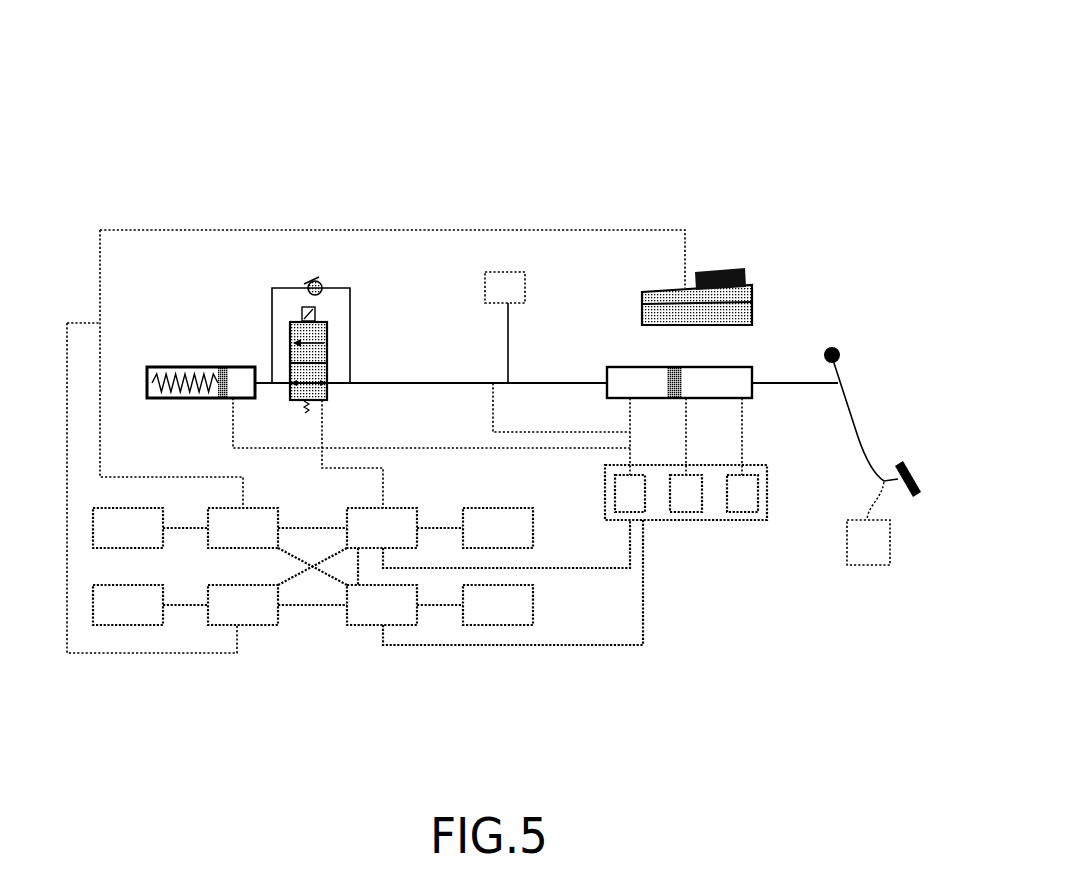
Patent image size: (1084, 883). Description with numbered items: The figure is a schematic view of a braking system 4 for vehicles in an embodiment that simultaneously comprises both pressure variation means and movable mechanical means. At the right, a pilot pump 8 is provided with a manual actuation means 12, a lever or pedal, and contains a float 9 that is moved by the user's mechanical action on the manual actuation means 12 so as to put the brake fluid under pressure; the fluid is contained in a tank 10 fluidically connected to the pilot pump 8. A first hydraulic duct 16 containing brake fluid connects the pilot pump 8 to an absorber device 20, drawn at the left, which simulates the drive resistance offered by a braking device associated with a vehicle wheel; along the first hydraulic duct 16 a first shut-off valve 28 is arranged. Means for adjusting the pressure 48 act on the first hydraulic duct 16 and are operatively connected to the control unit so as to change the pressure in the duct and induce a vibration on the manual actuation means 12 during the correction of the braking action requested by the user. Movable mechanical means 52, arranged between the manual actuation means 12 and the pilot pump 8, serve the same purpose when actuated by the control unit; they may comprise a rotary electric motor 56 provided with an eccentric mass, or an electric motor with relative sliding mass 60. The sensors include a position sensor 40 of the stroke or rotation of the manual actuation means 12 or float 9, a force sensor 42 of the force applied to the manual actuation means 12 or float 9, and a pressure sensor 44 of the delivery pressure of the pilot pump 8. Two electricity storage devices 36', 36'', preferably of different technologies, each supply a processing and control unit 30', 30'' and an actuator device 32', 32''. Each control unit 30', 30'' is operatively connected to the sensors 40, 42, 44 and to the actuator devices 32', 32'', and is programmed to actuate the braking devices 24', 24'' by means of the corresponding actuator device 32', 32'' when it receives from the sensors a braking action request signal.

The braking system 4 is at (410, 134).
The pilot pump 8 is at (607, 368).
The float 9 is at (668, 366).
The tank 10 is at (667, 292).
The manual actuation means 12 is at (860, 437).
The first hydraulic duct 16 is at (390, 382).
The absorber device 20 is at (177, 364).
The first shut-off valve 28 is at (329, 395).
The means for adjusting the pressure 48 is at (557, 352).
The braking device 24' is at (150, 528).
The actuator device 32' is at (277, 546).
The processing and control unit 30' is at (488, 546).
The electricity storage device 36' is at (498, 528).
The braking device 24'' is at (150, 605).
The actuator device 32'' is at (277, 586).
The processing and control unit 30'' is at (495, 582).
The electricity storage device 36'' is at (498, 605).
The position sensor 40 is at (630, 493).
The force sensor 42 is at (686, 493).
The pressure sensor 44 is at (742, 493).
The movable mechanical means 52 is at (838, 570).
The rotary electric motor 56 is at (838, 570).
The electric motor with relative sliding mass 60 is at (872, 547).